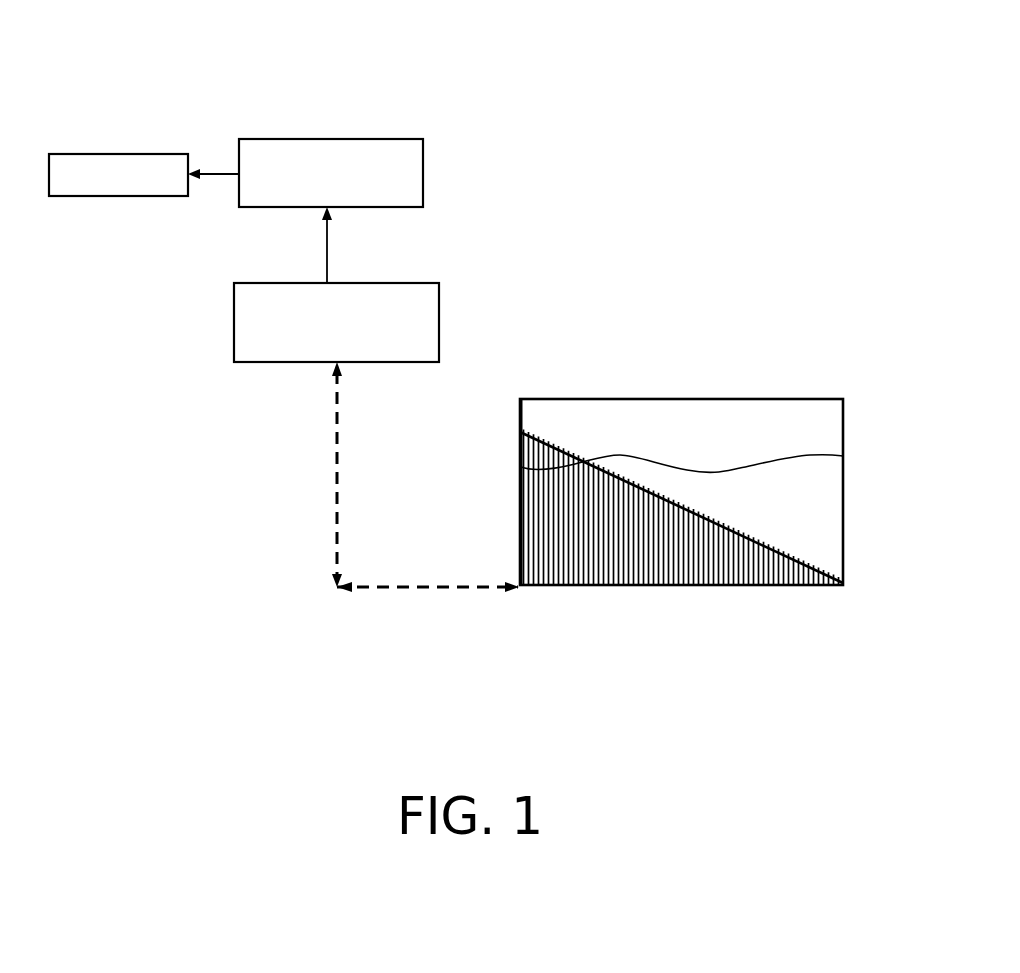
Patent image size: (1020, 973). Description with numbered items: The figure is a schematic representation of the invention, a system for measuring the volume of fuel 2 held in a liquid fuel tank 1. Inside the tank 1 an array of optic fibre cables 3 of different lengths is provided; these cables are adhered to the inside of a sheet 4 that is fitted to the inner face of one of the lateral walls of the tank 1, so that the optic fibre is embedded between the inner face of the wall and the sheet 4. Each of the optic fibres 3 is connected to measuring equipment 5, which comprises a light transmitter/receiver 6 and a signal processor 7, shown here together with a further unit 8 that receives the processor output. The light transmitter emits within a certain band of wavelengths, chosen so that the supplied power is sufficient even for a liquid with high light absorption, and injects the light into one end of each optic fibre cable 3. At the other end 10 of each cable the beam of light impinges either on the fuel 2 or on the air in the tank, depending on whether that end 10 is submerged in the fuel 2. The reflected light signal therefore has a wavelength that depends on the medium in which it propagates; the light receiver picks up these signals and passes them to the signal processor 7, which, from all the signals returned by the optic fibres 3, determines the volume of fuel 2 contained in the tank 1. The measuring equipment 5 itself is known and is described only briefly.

The liquid fuel tank 1 is at (845, 500).
The fuel 2 is at (732, 469).
The optic fibre cables 3 is at (648, 568).
The sheet 4 is at (578, 574).
The measuring equipment 5 is at (190, 524).
The light transmitter/receiver 6 is at (427, 322).
The signal processor 7 is at (318, 158).
The display unit 8 is at (122, 160).
The other end of the optic fibre cable 10 is at (647, 483).